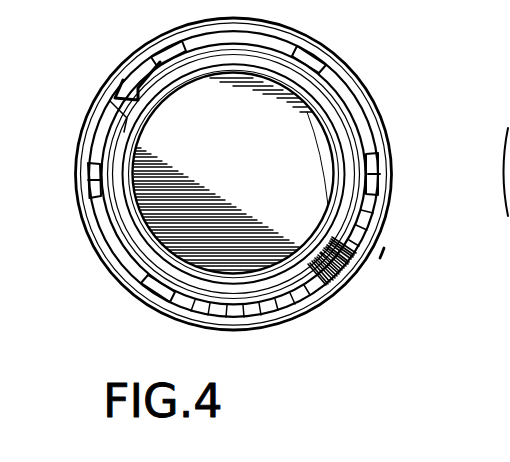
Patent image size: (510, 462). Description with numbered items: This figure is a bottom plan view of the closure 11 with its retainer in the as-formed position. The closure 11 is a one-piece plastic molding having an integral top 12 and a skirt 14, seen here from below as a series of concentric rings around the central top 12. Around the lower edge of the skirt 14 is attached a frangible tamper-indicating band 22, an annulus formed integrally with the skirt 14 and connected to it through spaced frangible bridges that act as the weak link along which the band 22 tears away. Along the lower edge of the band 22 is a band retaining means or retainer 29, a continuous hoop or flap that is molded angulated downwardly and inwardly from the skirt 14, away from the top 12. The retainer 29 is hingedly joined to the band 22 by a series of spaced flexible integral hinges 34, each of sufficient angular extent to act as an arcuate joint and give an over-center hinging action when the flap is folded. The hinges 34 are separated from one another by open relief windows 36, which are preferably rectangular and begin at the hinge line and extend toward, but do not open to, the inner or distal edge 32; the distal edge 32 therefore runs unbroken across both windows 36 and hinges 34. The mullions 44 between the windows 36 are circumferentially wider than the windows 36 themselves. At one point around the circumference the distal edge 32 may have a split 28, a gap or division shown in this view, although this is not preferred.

The closure 11 is at (153, 338).
The top 12 is at (244, 182).
The skirt 14 is at (373, 101).
The tamper-indicating band 22 is at (374, 246).
The split 28 is at (122, 83).
The retainer 29 is at (340, 70).
The inner or distal edge 32 is at (112, 128).
The hinges 34 is at (127, 93).
The windows 36 is at (320, 47).
The mullions 44 is at (340, 262).